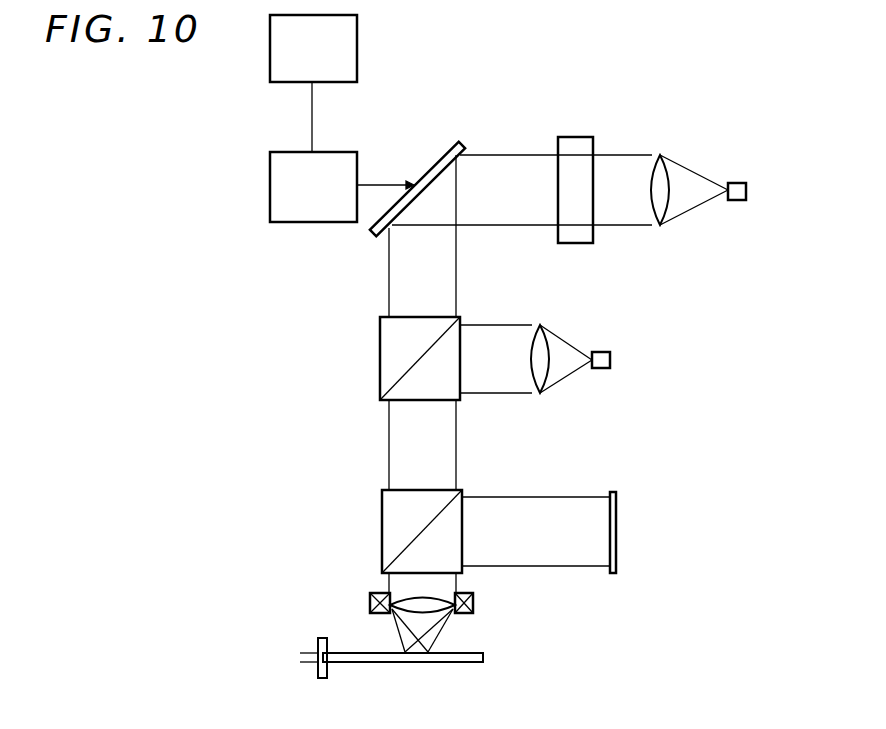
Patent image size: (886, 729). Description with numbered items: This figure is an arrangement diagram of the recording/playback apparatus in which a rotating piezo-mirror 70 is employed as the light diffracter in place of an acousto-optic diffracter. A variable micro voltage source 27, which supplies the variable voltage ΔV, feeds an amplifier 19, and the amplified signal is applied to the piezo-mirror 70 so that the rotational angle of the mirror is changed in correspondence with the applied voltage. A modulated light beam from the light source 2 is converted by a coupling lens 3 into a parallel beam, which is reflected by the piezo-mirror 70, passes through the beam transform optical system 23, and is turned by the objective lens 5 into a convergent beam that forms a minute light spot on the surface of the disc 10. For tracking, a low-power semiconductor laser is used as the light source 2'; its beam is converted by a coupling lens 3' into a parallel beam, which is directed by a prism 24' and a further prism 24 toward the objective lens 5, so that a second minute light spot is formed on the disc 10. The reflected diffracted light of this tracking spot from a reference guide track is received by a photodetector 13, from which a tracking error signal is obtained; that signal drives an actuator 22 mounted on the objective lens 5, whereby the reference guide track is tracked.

The variable micro voltage source 27 is at (357, 33).
The amplifier 19 is at (338, 152).
The rotating piezo-mirror 70 is at (457, 143).
The beam transform optical system 23 is at (576, 137).
The coupling lens 3 is at (689, 160).
The light source 2 is at (756, 180).
The coupling lens 3' is at (561, 336).
The light source for tracking 2' is at (619, 344).
The prism 24' is at (392, 358).
The beam splitter 24 is at (393, 531).
The photodetector 13 is at (612, 492).
The objective lens 5 is at (415, 598).
The actuator 22 is at (370, 610).
The disc 10 is at (483, 658).